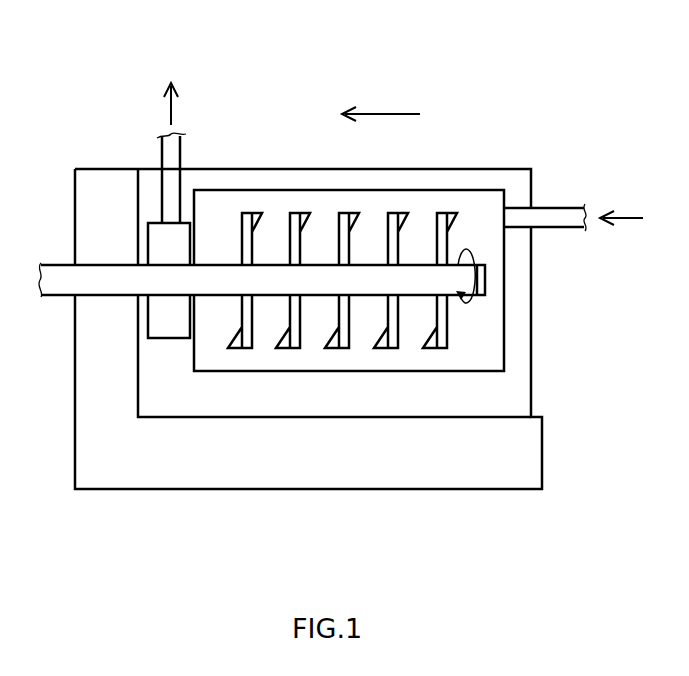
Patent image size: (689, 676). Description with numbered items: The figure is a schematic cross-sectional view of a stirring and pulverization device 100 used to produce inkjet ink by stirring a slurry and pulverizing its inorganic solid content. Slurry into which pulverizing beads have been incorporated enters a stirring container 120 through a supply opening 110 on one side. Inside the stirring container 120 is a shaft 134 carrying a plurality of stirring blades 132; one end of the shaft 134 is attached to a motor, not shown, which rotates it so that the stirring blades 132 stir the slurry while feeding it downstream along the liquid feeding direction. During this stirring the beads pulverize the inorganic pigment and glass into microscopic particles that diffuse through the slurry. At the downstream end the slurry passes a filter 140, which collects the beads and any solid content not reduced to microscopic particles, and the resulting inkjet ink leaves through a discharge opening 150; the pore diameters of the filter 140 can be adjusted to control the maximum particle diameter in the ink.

The stirring and pulverization device 100 is at (559, 88).
The supply opening 110 is at (553, 217).
The stirring container 120 is at (451, 183).
The stirring blades 132 is at (295, 217).
The shaft 134 is at (215, 273).
The filter 140 is at (190, 338).
The discharge opening 150 is at (170, 160).